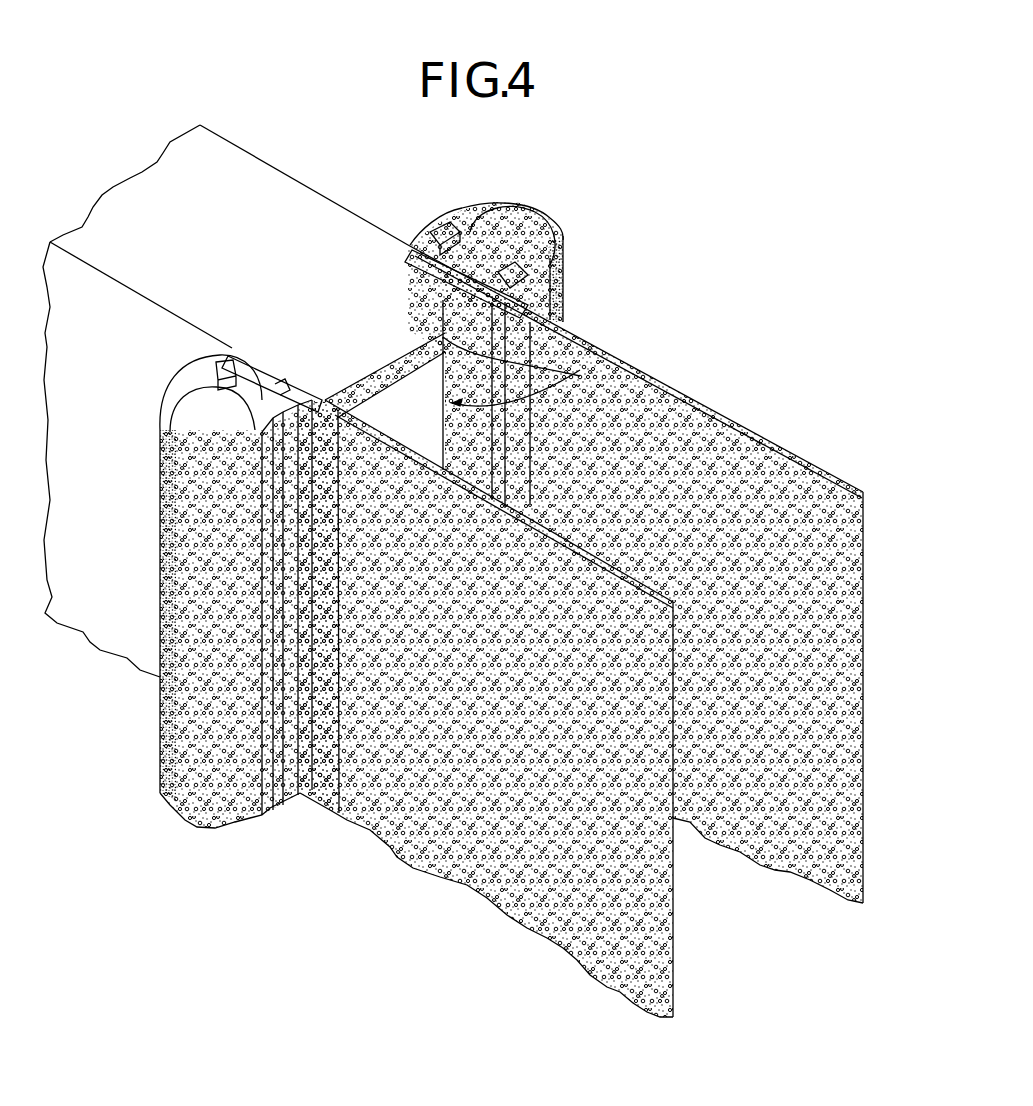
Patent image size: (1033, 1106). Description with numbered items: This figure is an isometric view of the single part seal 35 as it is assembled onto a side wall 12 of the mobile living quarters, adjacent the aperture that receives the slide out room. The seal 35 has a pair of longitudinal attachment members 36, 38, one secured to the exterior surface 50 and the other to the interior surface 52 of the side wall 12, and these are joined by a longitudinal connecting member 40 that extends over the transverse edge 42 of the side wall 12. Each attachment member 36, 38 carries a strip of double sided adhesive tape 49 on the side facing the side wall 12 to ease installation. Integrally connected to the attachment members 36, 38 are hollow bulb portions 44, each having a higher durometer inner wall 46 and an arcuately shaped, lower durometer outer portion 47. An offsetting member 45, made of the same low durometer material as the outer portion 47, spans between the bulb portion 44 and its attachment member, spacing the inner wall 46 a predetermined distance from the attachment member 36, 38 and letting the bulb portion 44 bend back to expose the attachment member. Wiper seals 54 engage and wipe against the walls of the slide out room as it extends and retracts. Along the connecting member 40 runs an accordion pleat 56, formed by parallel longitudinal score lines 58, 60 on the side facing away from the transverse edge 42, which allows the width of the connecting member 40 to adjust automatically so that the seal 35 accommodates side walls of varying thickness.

The side wall 12 is at (243, 172).
The seal 35 is at (300, 847).
The attachment member 36 is at (228, 354).
The attachment member 38 is at (405, 245).
The connecting member 40 is at (605, 368).
The transverse edge 42 is at (437, 346).
The bulb portion 44 is at (555, 218).
The offsetting member 45 is at (450, 225).
The inner wall 46 is at (508, 222).
The outer portion 47 is at (567, 235).
The double sided adhesive tape 49 is at (453, 266).
The exterior surface 50 is at (132, 344).
The interior surface 52 is at (335, 196).
The wiper seal 54 is at (598, 957).
The accordion pleat 56 is at (640, 374).
The first score line 58 is at (380, 378).
The second score line 60 is at (568, 334).